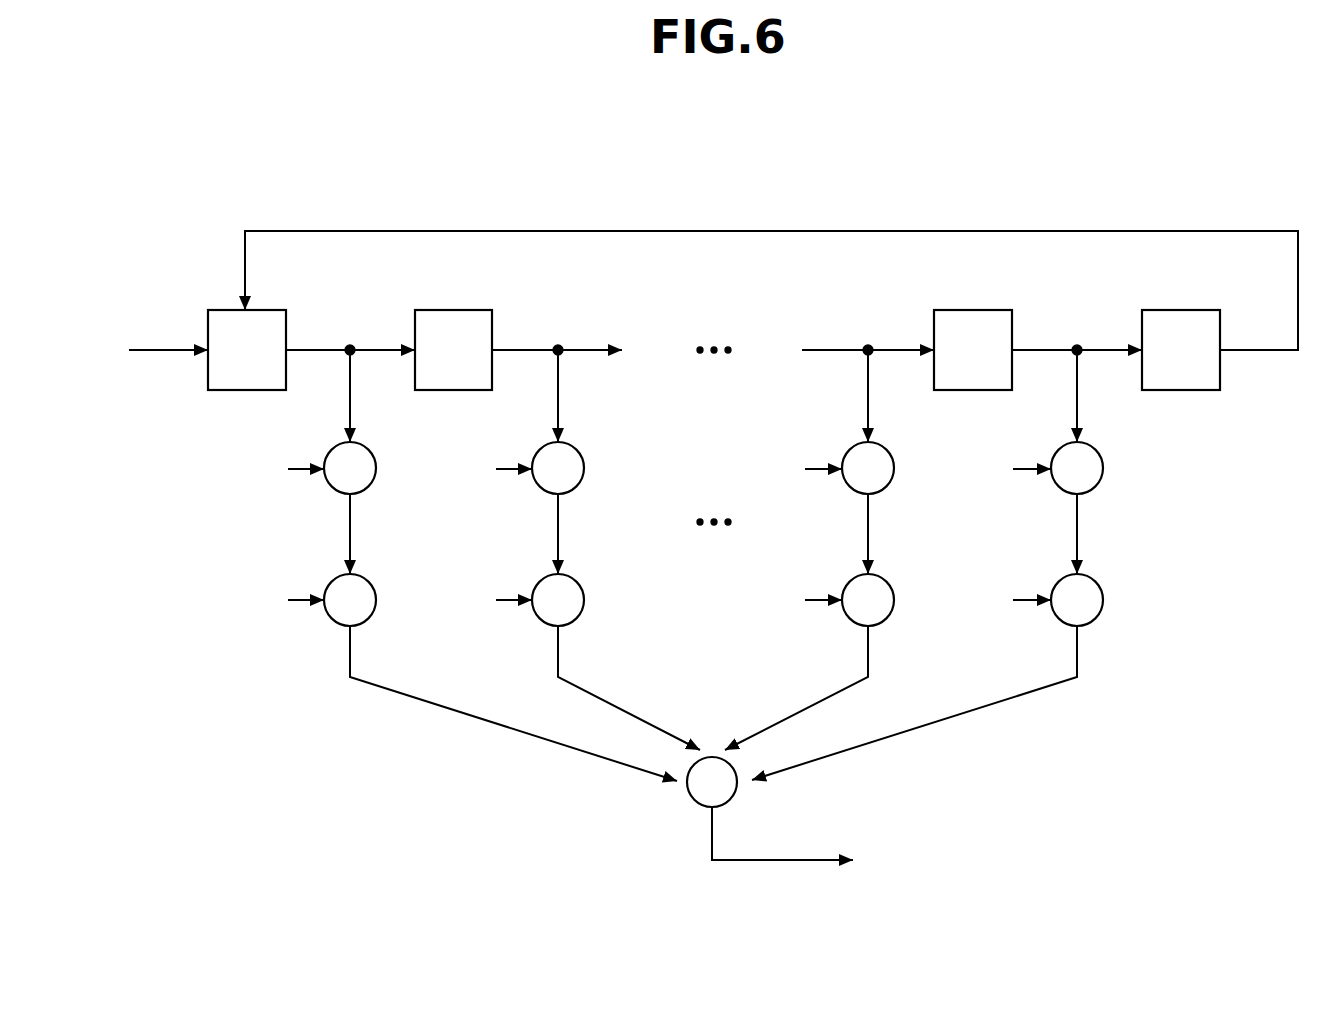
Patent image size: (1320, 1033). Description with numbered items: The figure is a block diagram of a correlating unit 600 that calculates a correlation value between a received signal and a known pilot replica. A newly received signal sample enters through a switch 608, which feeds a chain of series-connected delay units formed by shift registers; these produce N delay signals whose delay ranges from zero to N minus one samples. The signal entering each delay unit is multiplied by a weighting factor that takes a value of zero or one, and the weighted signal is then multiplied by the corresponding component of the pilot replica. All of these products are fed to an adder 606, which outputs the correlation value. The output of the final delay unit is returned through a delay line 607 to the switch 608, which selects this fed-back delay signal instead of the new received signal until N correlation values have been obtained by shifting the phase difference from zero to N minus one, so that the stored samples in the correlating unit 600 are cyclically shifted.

The correlating unit 600 is at (90, 218).
The adder 606 is at (694, 800).
The delay line 607 is at (770, 231).
The switch 608 is at (272, 308).